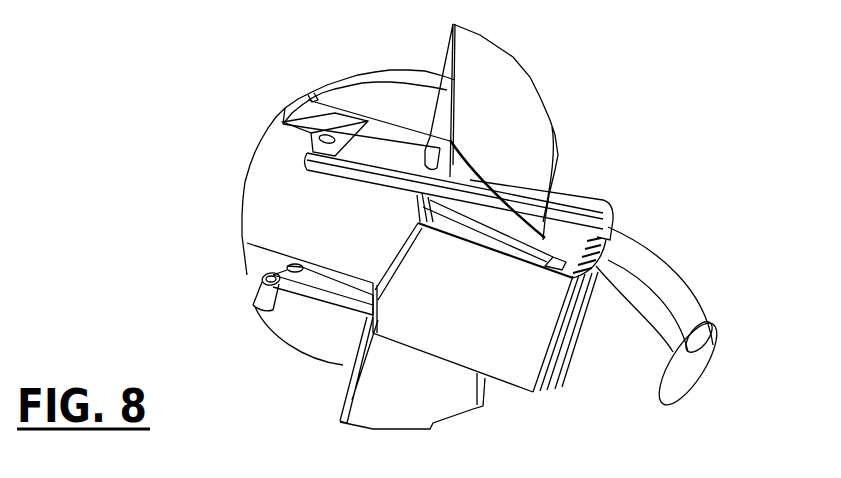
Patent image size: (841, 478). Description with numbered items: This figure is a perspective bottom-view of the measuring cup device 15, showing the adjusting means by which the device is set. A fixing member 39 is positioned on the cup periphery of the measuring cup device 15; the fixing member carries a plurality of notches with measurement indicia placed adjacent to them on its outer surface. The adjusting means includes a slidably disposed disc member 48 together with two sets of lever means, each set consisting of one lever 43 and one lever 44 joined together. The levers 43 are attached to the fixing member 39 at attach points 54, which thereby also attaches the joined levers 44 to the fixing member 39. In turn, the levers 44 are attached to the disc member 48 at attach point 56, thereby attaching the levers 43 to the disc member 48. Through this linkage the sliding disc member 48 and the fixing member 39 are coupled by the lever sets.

The measuring cup device 15 is at (614, 151).
The fixing member 39 is at (447, 312).
The lever 43 is at (385, 163).
The lever 44 is at (318, 135).
The disc member 48 is at (272, 202).
The attach point 54 is at (453, 166).
The attach point 56 is at (287, 266).